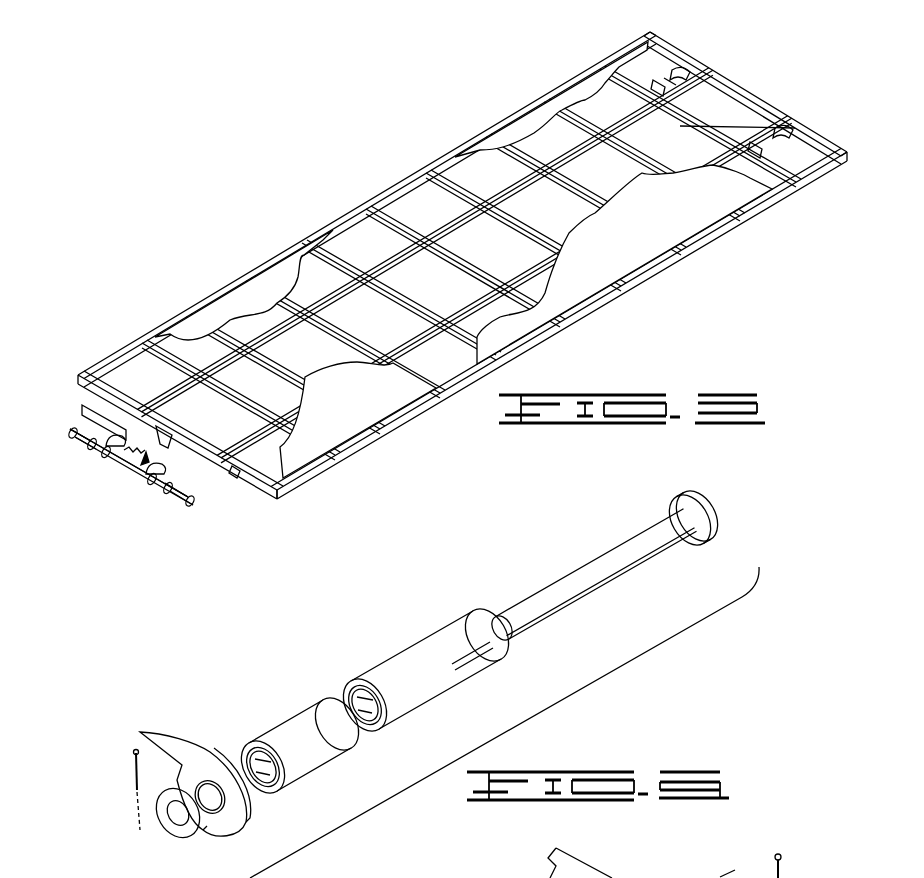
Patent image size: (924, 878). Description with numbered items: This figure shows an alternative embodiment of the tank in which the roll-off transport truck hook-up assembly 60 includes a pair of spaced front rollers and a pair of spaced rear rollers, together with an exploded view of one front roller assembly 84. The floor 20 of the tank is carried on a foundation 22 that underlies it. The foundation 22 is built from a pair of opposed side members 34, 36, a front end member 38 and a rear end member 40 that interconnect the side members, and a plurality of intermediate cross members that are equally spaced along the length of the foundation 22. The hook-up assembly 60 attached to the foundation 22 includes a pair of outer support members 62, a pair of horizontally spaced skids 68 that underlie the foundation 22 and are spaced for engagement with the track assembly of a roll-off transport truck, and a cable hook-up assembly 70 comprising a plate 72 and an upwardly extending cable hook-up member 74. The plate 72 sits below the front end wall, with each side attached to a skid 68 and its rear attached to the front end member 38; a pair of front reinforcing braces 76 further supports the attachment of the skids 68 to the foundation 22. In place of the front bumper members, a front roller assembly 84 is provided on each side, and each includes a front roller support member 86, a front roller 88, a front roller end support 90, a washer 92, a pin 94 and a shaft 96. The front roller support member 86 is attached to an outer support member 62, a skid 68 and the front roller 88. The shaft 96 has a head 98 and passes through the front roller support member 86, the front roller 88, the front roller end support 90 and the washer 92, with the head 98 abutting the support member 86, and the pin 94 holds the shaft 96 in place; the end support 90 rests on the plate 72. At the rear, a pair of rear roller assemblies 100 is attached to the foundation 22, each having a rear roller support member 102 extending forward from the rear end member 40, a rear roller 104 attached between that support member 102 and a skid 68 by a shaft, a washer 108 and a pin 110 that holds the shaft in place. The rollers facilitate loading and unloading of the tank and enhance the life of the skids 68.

In FIG. 5, the floor 20 is at (437, 309).
In FIG. 5, the foundation 22 is at (650, 38).
In FIG. 5, the side member 34 is at (702, 237).
In FIG. 5, the side member 36 is at (112, 342).
In FIG. 5, the front end member 38 is at (277, 493).
In FIG. 5, the rear end member 40 is at (750, 92).
In FIG. 5, the roll-off transport truck hook-up assembly 60 is at (143, 460).
In FIG. 5, the outer support member 62 is at (135, 376).
In FIG. 5, the skid 68 is at (303, 283).
In FIG. 6, the skid 68 is at (629, 877).
In FIG. 5, the cable hook-up assembly 70 is at (123, 438).
In FIG. 5, the plate 72 is at (127, 413).
In FIG. 5, the cable hook-up member 74 is at (128, 430).
In FIG. 5, the front reinforcing brace 76 is at (237, 473).
In FIG. 5, the front roller assembly 84 is at (93, 447).
In FIG. 6, the front roller assembly 84 is at (714, 494).
In FIG. 5, the front roller support member 86 is at (87, 443).
In FIG. 6, the front roller support member 86 is at (423, 653).
In FIG. 5, the front roller 88 is at (100, 452).
In FIG. 6, the front roller 88 is at (297, 727).
In FIG. 5, the front roller end support 90 is at (110, 457).
In FIG. 6, the front roller end support 90 is at (192, 767).
In FIG. 6, the washer 92 is at (180, 830).
In FIG. 6, the pin 94 is at (132, 765).
In FIG. 6, the shaft 96 is at (597, 588).
In FIG. 6, the head 98 is at (703, 525).
In FIG. 5, the rear roller assembly 100 is at (682, 72).
In FIG. 6, the rear roller assembly 100 is at (785, 842).
In FIG. 5, the rear roller support member 102 is at (659, 87).
In FIG. 5, the rear roller 104 is at (675, 82).
In FIG. 6, the washer 108 is at (732, 877).
In FIG. 6, the pin 110 is at (781, 872).